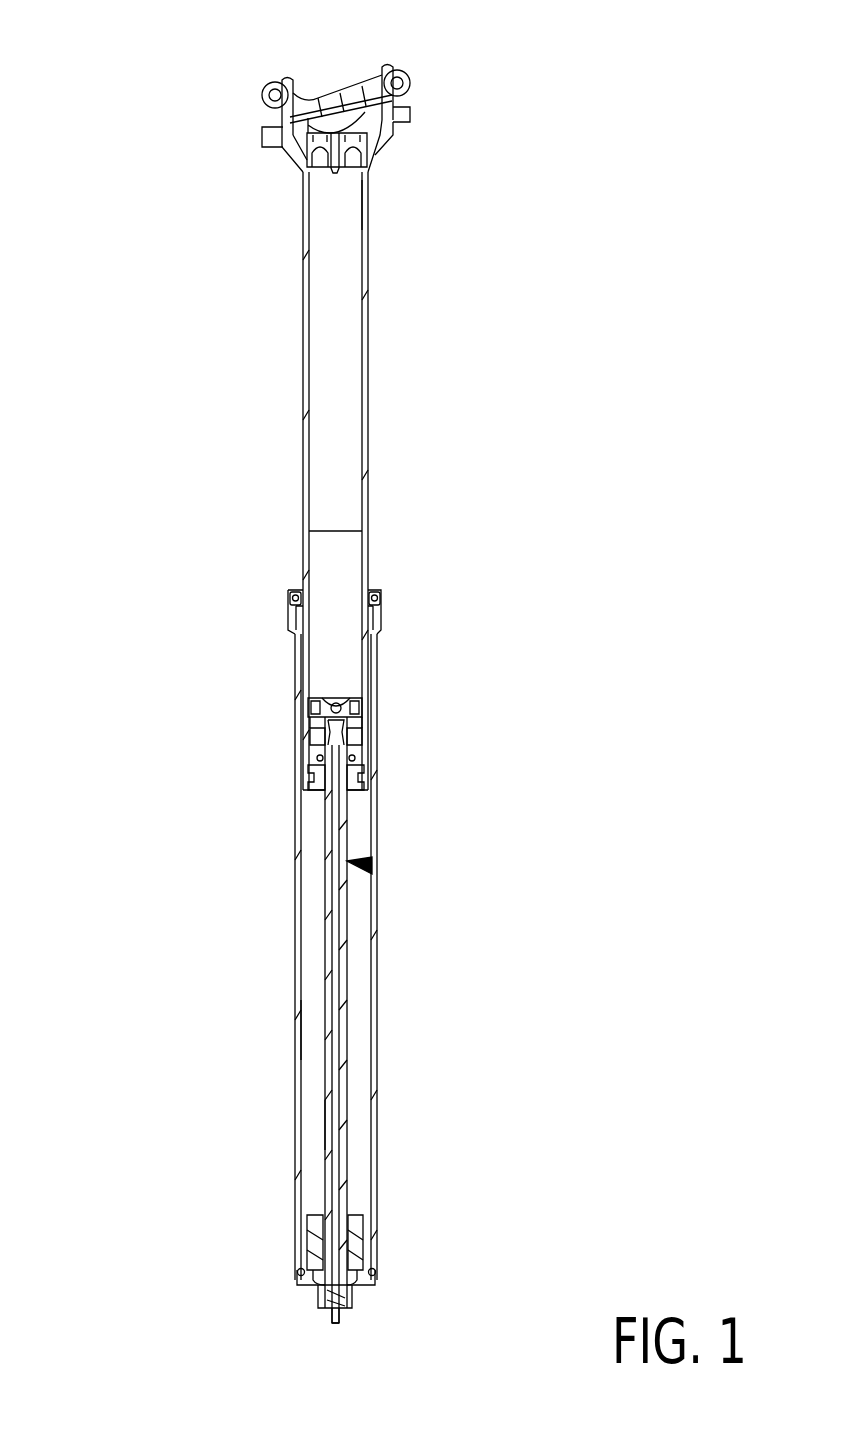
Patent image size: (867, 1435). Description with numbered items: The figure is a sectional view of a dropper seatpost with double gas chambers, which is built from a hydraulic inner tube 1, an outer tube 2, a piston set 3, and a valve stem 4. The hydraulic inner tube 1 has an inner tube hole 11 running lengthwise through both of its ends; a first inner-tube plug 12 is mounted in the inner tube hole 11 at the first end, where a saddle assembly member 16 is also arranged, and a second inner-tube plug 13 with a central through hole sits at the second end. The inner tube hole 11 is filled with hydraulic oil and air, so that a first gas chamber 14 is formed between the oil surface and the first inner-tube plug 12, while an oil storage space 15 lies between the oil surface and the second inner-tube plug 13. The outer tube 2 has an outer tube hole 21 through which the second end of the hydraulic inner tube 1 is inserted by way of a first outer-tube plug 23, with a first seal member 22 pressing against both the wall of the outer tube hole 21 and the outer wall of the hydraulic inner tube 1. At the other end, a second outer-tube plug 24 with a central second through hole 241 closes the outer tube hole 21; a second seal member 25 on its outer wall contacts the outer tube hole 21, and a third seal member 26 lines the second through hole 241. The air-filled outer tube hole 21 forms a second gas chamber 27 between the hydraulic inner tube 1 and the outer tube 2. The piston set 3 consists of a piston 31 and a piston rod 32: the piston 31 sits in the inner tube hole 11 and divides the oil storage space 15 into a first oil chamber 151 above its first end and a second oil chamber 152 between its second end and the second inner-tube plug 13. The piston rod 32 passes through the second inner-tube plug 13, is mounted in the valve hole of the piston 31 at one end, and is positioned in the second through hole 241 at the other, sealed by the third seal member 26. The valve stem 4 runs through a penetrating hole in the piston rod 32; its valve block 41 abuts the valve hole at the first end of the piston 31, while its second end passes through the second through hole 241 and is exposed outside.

The hydraulic inner tube 1 is at (368, 395).
The inner tube hole 11 is at (366, 192).
The first inner-tube plug 12 is at (307, 150).
The second inner-tube plug 13 is at (312, 790).
The first gas chamber 14 is at (337, 342).
The oil storage space 15 is at (157, 757).
The first oil chamber 151 is at (327, 652).
The second oil chamber 152 is at (328, 728).
The saddle assembly member 16 is at (360, 78).
The outer tube 2 is at (293, 928).
The outer tube hole 21 is at (308, 1035).
The first seal member 22 is at (292, 628).
The first outer-tube plug 23 is at (376, 592).
The second outer-tube plug 24 is at (371, 1285).
The second through hole 241 is at (325, 1290).
The second seal member 25 is at (297, 1270).
The third seal member 26 is at (358, 1297).
The second gas chamber 27 is at (315, 1123).
The piston set 3 is at (373, 867).
The piston 31 is at (375, 702).
The piston rod 32 is at (345, 830).
The valve stem 4 is at (338, 953).
The valve block 41 is at (345, 700).